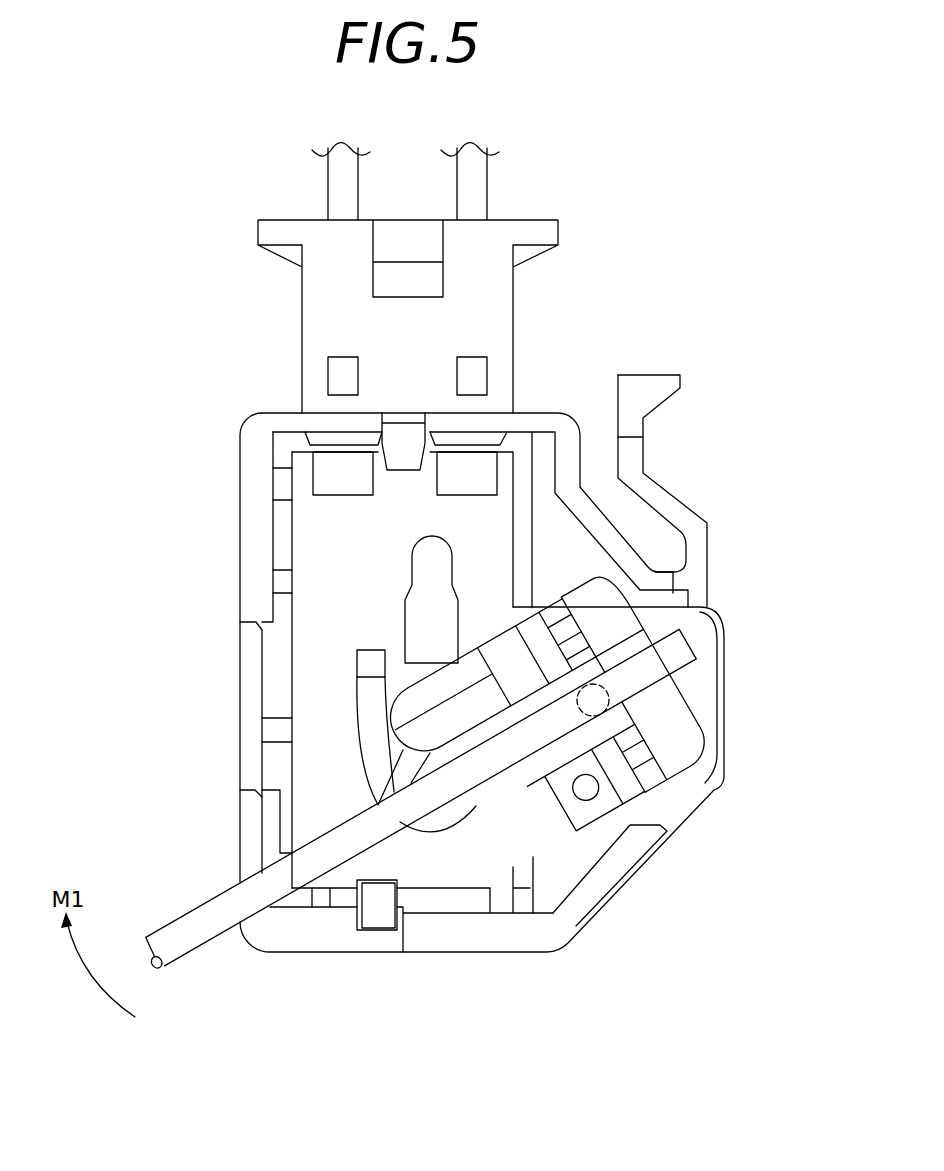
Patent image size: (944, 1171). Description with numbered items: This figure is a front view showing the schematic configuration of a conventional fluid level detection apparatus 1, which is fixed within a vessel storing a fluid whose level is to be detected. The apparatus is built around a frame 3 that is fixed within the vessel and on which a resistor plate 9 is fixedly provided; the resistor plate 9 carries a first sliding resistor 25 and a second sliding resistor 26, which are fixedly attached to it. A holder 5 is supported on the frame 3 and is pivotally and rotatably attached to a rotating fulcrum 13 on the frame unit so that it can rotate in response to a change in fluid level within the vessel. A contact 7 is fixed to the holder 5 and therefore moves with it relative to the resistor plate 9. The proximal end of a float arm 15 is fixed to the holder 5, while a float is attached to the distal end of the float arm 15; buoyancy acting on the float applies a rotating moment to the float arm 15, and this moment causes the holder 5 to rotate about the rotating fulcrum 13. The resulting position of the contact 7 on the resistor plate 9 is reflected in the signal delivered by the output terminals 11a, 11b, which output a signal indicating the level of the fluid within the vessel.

The fluid level detection apparatus 1 is at (234, 466).
The frame 3 is at (240, 523).
The holder 5 is at (682, 740).
The contact 7 is at (448, 830).
The resistor plate 9 is at (317, 543).
The output terminal 11a is at (327, 180).
The output terminal 11b is at (488, 177).
The rotating fulcrum 13 is at (594, 704).
The float arm 15 is at (202, 935).
The first sliding resistor 25 is at (357, 708).
The second sliding resistor 26 is at (423, 660).